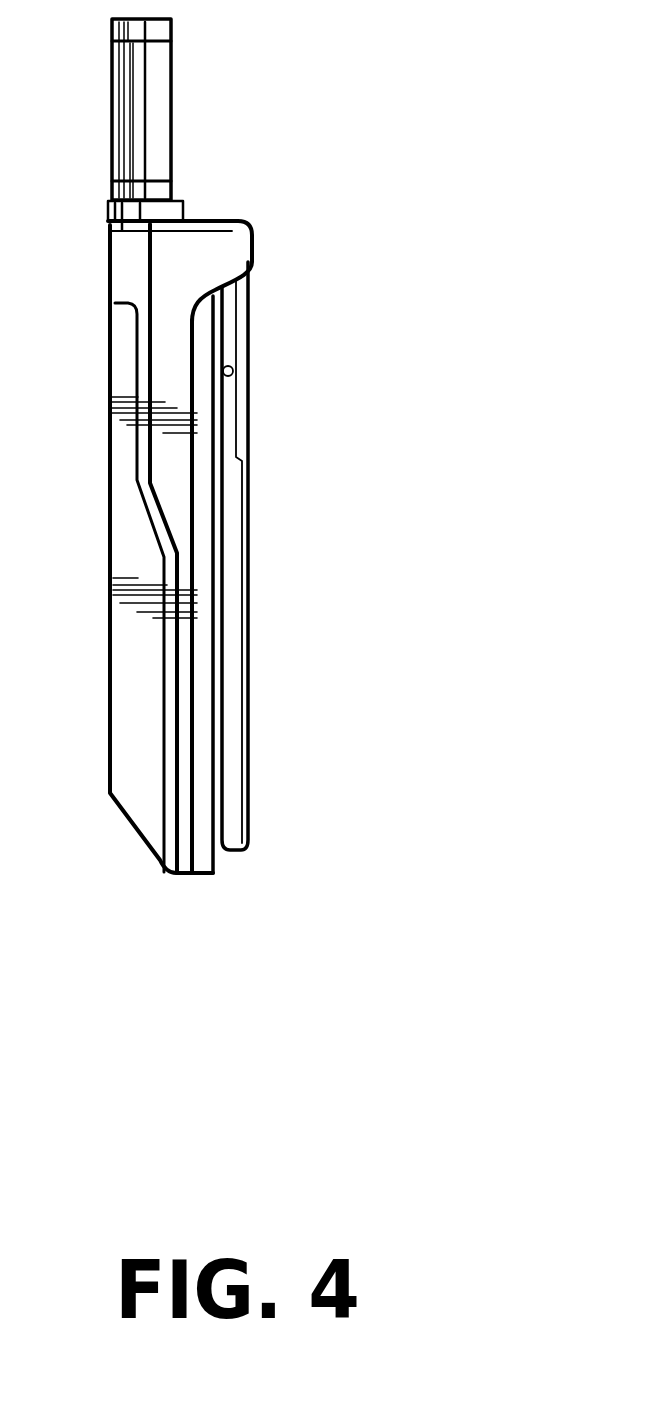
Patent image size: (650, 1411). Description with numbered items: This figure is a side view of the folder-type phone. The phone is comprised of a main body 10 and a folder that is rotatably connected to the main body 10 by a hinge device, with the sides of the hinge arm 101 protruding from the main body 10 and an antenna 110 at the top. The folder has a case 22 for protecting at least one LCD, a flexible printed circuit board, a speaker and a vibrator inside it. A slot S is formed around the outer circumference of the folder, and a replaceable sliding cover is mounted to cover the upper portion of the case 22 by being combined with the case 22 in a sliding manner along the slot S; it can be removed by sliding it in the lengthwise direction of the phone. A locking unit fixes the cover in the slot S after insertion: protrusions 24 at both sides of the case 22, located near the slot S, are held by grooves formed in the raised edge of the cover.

The main body 10 is at (123, 862).
The hinge arm 101 is at (197, 258).
The antenna 110 is at (155, 90).
The case 22 is at (247, 537).
The protrusions 24 is at (232, 367).
The slot S is at (222, 860).